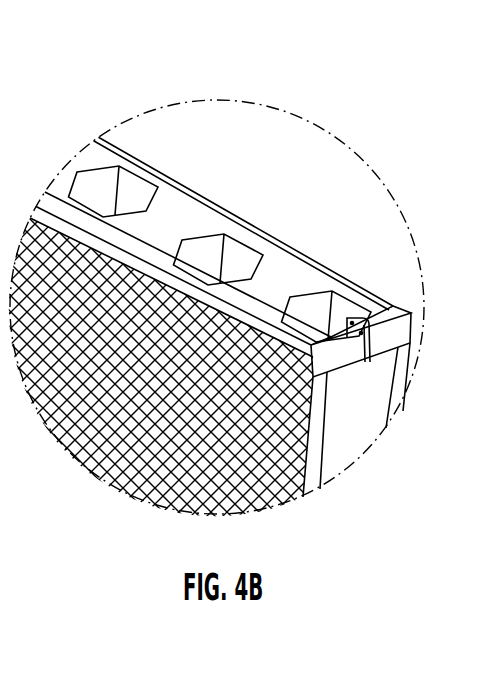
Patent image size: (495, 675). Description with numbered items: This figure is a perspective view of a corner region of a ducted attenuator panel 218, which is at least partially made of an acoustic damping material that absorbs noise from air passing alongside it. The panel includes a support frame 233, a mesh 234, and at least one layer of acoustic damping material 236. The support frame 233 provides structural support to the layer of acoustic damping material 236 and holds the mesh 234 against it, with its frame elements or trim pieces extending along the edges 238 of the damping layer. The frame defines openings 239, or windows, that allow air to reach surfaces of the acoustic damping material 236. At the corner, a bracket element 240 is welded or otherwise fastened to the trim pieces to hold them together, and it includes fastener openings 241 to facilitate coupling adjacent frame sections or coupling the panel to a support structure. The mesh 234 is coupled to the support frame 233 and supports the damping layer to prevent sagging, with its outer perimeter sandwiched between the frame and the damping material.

The ducted attenuator panel 218 is at (250, 70).
The support frame 233 is at (350, 278).
The mesh 234 is at (148, 477).
The layer of acoustic damping material 236 is at (281, 277).
The edges 238 is at (82, 226).
The openings 239 is at (150, 283).
The bracket elements 240 is at (388, 343).
The fastener openings 241 is at (350, 321).